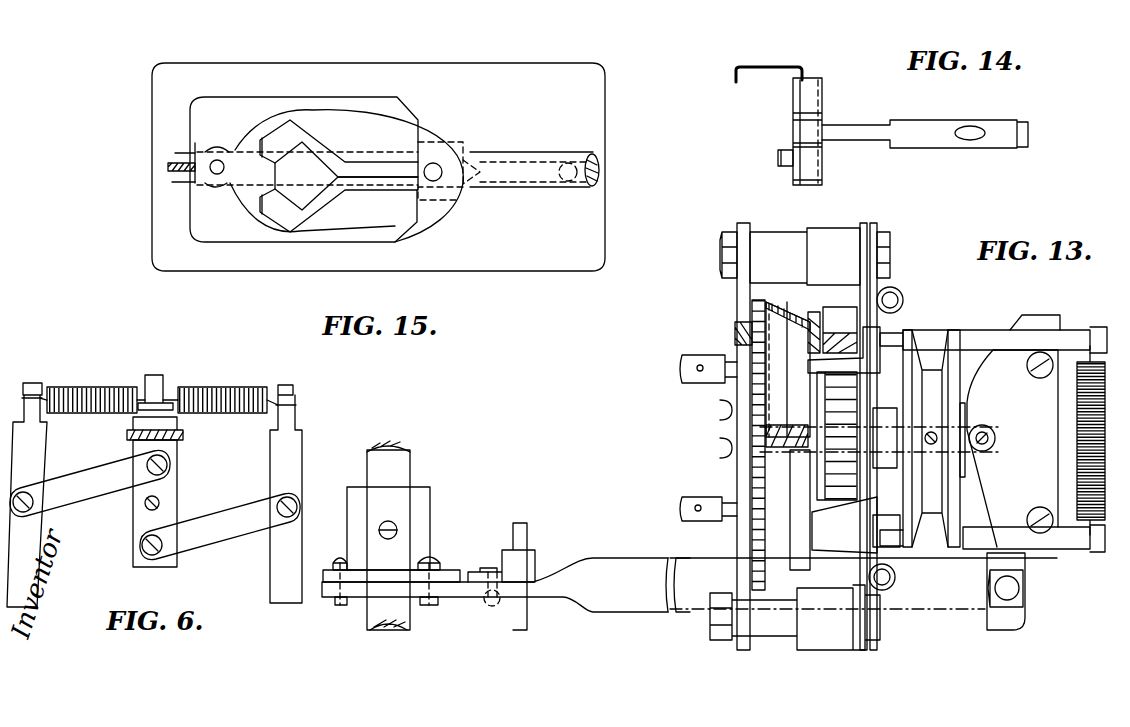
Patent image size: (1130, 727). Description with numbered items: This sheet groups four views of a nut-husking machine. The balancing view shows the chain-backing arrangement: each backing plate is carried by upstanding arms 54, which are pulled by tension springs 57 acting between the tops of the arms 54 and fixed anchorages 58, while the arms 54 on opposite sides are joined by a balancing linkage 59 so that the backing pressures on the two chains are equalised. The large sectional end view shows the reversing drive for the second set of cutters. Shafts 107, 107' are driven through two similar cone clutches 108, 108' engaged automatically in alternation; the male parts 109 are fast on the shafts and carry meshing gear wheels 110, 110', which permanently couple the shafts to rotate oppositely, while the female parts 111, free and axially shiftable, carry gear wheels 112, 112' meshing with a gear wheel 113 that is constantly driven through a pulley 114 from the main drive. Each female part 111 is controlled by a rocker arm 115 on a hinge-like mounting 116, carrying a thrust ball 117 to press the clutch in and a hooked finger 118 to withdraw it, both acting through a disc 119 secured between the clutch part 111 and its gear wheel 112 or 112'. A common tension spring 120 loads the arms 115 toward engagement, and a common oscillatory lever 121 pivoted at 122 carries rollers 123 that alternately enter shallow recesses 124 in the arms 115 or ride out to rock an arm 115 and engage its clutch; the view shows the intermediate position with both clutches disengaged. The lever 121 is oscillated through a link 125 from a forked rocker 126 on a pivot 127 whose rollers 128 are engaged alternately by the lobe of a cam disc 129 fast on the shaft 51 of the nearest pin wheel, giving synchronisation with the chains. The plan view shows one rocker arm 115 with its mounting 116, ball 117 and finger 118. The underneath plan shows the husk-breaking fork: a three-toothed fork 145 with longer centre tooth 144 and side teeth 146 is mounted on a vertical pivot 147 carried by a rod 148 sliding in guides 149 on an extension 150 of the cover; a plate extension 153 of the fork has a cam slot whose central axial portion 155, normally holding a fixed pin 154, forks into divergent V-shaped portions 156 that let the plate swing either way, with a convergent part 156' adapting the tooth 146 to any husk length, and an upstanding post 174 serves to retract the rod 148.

In FIG. 13, the shaft 51 is at (405, 612).
In FIG. 6, the upstanding arm 54 is at (37, 537).
In FIG. 6, the tension spring 57 is at (90, 395).
In FIG. 6, the fixed anchorage 58 is at (163, 380).
In FIG. 6, the balancing linkage 59 is at (193, 523).
In FIG. 13, the shaft 107 is at (707, 380).
In FIG. 13, the shaft 107' is at (708, 489).
In FIG. 13, the cone clutch 108 is at (786, 341).
In FIG. 13, the cone clutch 108' is at (795, 612).
In FIG. 13, the male clutch part 109 is at (792, 300).
In FIG. 13, the gear wheel 110 is at (727, 445).
In FIG. 13, the gear wheel 110' is at (708, 491).
In FIG. 13, the female clutch part 111 is at (812, 313).
In FIG. 13, the gear wheel 112 is at (906, 368).
In FIG. 13, the gear wheel 112' is at (856, 525).
In FIG. 13, the gear wheel 113 is at (837, 458).
In FIG. 13, the pulley 114 is at (963, 367).
In FIG. 14, the rocker arm 115 is at (928, 128).
In FIG. 13, the rocker arm 115 is at (978, 332).
In FIG. 14, the hinge-like mounting 116 is at (810, 78).
In FIG. 13, the hinge-like mounting 116 is at (893, 290).
In FIG. 14, the thrust ball 117 is at (782, 152).
In FIG. 14, the hooked finger 118 is at (763, 67).
In FIG. 13, the hooked finger 118 is at (873, 347).
In FIG. 13, the disc 119 is at (847, 323).
In FIG. 13, the tension spring 120 is at (1077, 456).
In FIG. 13, the oscillatory lever 121 is at (1011, 431).
In FIG. 13, the pivot 122 is at (996, 438).
In FIG. 13, the roller 123 is at (1030, 370).
In FIG. 13, the shallow recess 124 is at (1038, 352).
In FIG. 13, the link 125 is at (950, 600).
In FIG. 13, the forked rocker 126 is at (460, 590).
In FIG. 13, the pivot 127 is at (527, 612).
In FIG. 13, the roller 128 is at (338, 560).
In FIG. 13, the cam disc 129 is at (392, 575).
In FIG. 15, the centre tooth 144 is at (168, 170).
In FIG. 15, the three-toothed fork 145 is at (203, 147).
In FIG. 15, the side tooth 146 is at (180, 153).
In FIG. 15, the vertical pivot 147 is at (217, 158).
In FIG. 15, the rod 148 is at (512, 157).
In FIG. 15, the guide 149 is at (452, 198).
In FIG. 15, the extension 150 is at (362, 78).
In FIG. 15, the extension 153 is at (372, 137).
In FIG. 15, the fixed pin 154 is at (433, 163).
In FIG. 15, the central axial cam-slot portion 155 is at (408, 243).
In FIG. 15, the divergent V-shaped slot portion 156 is at (295, 169).
In FIG. 15, the convergent slot part 156' is at (251, 185).
In FIG. 15, the upstanding post 174 is at (568, 163).